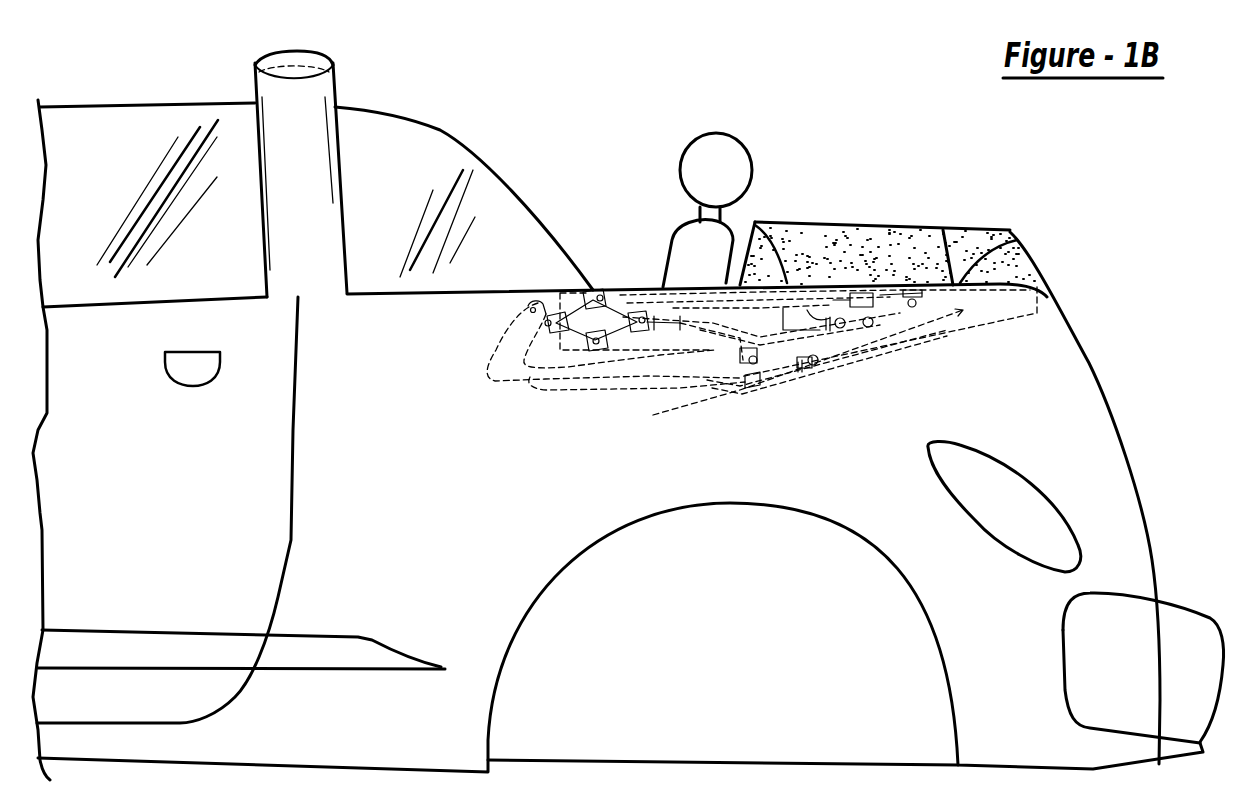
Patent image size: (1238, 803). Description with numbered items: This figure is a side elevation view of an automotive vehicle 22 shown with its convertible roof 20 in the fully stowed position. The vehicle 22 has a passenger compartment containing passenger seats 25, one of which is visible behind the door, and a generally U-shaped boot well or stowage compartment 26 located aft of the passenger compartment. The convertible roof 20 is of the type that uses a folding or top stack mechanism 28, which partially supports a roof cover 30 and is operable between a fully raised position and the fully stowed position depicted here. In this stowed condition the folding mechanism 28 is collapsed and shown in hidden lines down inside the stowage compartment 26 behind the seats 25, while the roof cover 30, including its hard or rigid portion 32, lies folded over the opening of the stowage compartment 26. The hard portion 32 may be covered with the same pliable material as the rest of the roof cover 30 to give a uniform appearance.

The convertible roof 20 is at (900, 158).
The automotive vehicle 22 is at (625, 158).
The passenger seats 25 is at (697, 248).
The stowage compartment 26 is at (1007, 303).
The folding mechanism 28 is at (755, 400).
The roof cover 30 is at (850, 222).
The hard portion 32 is at (920, 228).